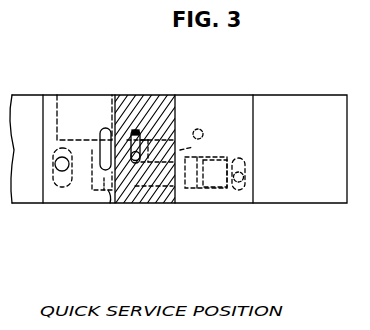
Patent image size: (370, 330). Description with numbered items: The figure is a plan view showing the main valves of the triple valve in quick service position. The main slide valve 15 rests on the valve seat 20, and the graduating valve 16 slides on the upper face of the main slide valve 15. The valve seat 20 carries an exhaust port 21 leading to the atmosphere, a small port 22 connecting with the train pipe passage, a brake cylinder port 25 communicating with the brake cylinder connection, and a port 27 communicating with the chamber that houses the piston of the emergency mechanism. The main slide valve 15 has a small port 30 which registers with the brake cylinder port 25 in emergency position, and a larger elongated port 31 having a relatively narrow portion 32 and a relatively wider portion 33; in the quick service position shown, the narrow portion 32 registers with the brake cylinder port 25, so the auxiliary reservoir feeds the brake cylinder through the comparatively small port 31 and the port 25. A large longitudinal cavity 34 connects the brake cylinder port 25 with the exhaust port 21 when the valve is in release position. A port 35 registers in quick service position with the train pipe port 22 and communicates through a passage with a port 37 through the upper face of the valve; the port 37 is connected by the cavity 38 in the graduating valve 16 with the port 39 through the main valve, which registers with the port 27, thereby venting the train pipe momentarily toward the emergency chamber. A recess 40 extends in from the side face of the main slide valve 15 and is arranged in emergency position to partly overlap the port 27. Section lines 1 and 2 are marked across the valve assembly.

The section line 1- 1 is at (282, 135).
The section line 2- 2 is at (282, 178).
The main slide valve 15 is at (247, 102).
The graduating valve 16 is at (138, 100).
The valve seat 20 is at (296, 204).
The exhaust port 21 is at (210, 196).
The small port 22 is at (201, 131).
The brake cylinder port 25 is at (110, 203).
The port 27 is at (147, 101).
The small port 30 is at (60, 171).
The elongated port 31 is at (106, 128).
The relatively narrow portion 32 is at (106, 191).
The relatively wider portion 33 is at (98, 193).
The longitudinal cavity 34 is at (180, 205).
The port 35 is at (198, 130).
The port 37 is at (186, 130).
The cavity 38 is at (135, 130).
The port 39 is at (132, 130).
The recess 40 is at (68, 100).